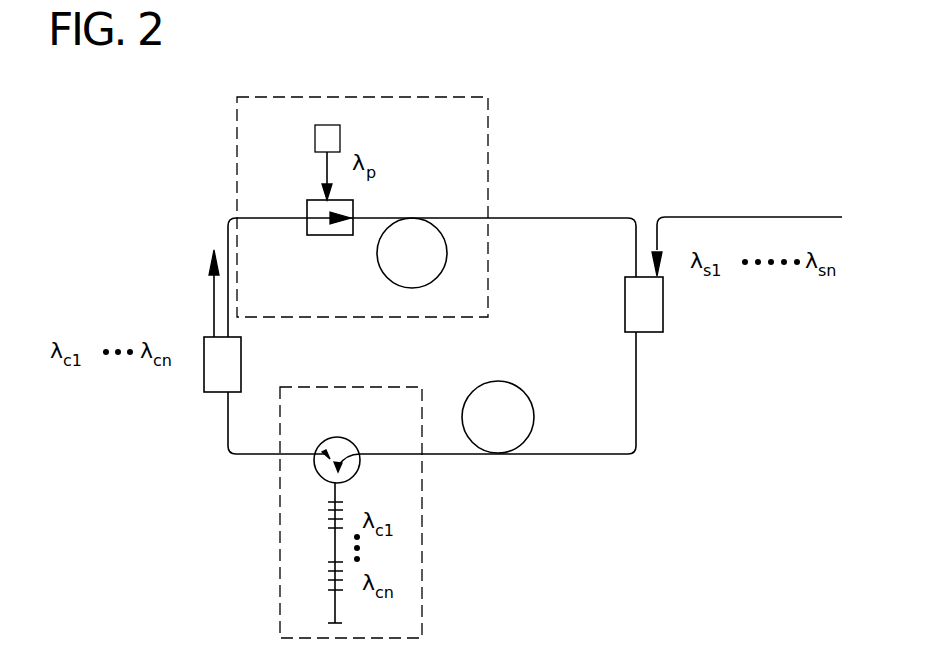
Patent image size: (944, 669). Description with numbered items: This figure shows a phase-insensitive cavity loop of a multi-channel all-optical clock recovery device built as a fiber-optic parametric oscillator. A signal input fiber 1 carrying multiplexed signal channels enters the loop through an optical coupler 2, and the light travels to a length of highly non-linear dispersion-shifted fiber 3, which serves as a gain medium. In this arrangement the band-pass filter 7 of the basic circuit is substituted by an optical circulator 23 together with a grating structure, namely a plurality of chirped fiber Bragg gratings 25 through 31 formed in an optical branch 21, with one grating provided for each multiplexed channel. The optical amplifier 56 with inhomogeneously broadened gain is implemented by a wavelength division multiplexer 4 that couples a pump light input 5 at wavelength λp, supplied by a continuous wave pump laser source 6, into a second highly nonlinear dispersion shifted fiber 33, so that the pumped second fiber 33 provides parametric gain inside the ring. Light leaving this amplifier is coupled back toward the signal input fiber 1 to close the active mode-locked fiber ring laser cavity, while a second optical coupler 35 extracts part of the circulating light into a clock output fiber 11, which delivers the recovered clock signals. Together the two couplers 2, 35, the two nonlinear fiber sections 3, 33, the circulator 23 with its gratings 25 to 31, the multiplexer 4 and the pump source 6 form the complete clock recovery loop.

The signal input fiber 1 is at (733, 215).
The optical coupler 2 is at (648, 320).
The highly non-linear dispersion-shifted fiber 3 is at (527, 392).
The wavelength division multiplexer 4 is at (353, 209).
The pump light input 5 is at (325, 165).
The continuous wave pump laser source 6 is at (328, 125).
The band-pass filter 7 is at (422, 562).
The clock output fiber 11 is at (212, 301).
The optical branch 21 is at (335, 546).
The optical circulator 23 is at (360, 460).
The chirped fiber Bragg grating 25 is at (338, 500).
The chirped fiber Bragg grating 31 is at (340, 590).
The second highly nonlinear dispersion shifted fiber 33 is at (450, 220).
The optical coupler 35 is at (213, 395).
The optical amplifier 56 is at (390, 97).